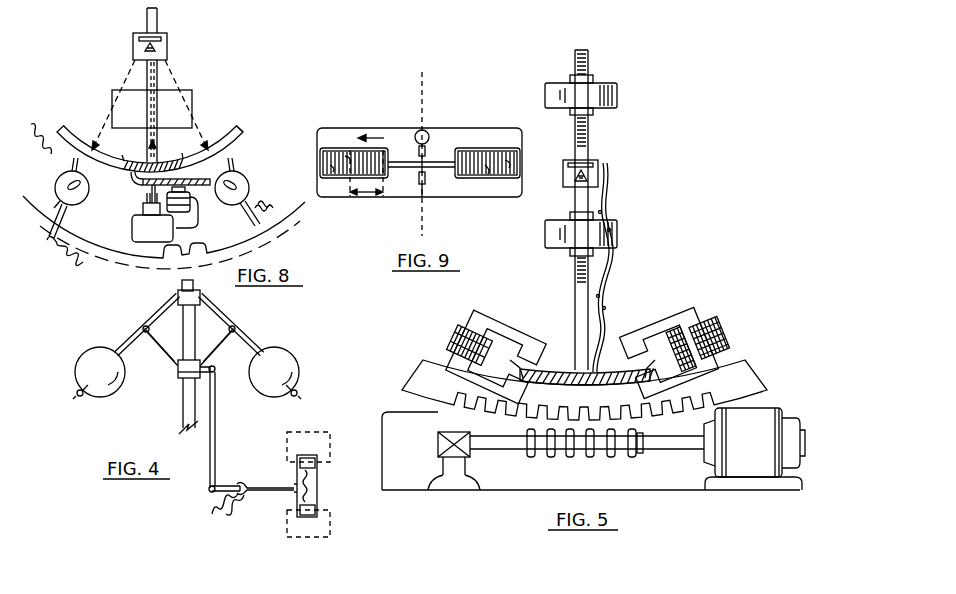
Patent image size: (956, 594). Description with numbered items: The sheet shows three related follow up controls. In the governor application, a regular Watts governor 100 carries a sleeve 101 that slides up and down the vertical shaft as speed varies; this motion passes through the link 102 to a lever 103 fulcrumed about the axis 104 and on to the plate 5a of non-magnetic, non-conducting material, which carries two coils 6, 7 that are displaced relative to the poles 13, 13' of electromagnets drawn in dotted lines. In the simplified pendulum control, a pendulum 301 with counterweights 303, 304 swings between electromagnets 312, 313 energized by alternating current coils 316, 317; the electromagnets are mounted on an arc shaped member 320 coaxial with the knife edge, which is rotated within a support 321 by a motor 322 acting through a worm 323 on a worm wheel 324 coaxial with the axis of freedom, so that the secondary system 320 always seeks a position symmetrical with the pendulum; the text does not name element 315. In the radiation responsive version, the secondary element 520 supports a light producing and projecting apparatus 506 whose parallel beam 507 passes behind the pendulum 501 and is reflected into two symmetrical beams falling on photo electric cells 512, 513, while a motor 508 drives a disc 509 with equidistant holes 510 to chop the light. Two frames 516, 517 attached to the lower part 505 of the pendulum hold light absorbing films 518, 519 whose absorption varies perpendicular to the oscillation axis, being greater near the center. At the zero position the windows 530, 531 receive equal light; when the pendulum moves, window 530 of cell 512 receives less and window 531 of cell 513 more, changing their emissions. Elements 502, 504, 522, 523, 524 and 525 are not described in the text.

In FIG. 8, the pendulum 501 is at (160, 78).
In FIG. 8, the lamp housing 502 is at (160, 39).
In FIG. 9, the lamp housing 502 is at (428, 131).
In FIG. 8, the lens 504 is at (192, 95).
In FIG. 8, the lower part of the pendulum 505 is at (154, 157).
In FIG. 9, the lower part of the pendulum 505 is at (403, 170).
In FIG. 8, the light producing and projecting apparatus 506 is at (152, 228).
In FIG. 8, the parallel beam of light 507 is at (147, 201).
In FIG. 9, the parallel beam of light 507 is at (416, 132).
In FIG. 8, the motor 508 is at (186, 218).
In FIG. 8, the disc 509 is at (165, 164).
In FIG. 8, the holes 510 is at (147, 163).
In FIG. 8, the photo electric cell 512 is at (83, 203).
In FIG. 8, the photo electric cell 513 is at (288, 172).
In FIG. 8, the frame 516 is at (92, 102).
In FIG. 9, the frame 516 is at (333, 130).
In FIG. 8, the frame 517 is at (205, 127).
In FIG. 9, the frame 517 is at (472, 148).
In FIG. 9, the light absorbing film 518 is at (333, 173).
In FIG. 9, the light absorbing film 519 is at (488, 172).
In FIG. 8, the secondary element 520 is at (262, 245).
In FIG. 8, the lead wire 522 is at (35, 116).
In FIG. 8, the lead wire 523 is at (80, 272).
In FIG. 8, the supporting rod 524 is at (53, 212).
In FIG. 8, the cross bar 525 is at (143, 182).
In FIG. 8, the window 530 is at (78, 170).
In FIG. 9, the window 530 is at (348, 158).
In FIG. 8, the window 531 is at (246, 134).
In FIG. 9, the window 531 is at (513, 158).
In FIG. 4, the Watts governor 100 is at (193, 330).
In FIG. 4, the sleeve 101 is at (176, 378).
In FIG. 4, the link 102 is at (215, 421).
In FIG. 4, the lever 103 is at (255, 495).
In FIG. 4, the axis 104 is at (238, 483).
In FIG. 4, the plate 5a is at (318, 488).
In FIG. 4, the coil 6 is at (305, 458).
In FIG. 4, the coil 7 is at (317, 505).
In FIG. 4, the pole 13 is at (309, 436).
In FIG. 4, the pole 13' is at (321, 536).
In FIG. 5, the pendulum 301 is at (589, 140).
In FIG. 5, the counterweight 303 is at (618, 96).
In FIG. 5, the counterweight 304 is at (618, 230).
In FIG. 5, the electromagnet 312 is at (486, 310).
In FIG. 5, the electromagnet 313 is at (655, 318).
In FIG. 5, the armature 315 is at (584, 386).
In FIG. 5, the coil 316 is at (460, 333).
In FIG. 5, the coil 317 is at (708, 322).
In FIG. 5, the arc shaped member 320 is at (748, 362).
In FIG. 5, the support 321 is at (383, 398).
In FIG. 5, the motor 322 is at (772, 440).
In FIG. 5, the worm 323 is at (606, 457).
In FIG. 5, the worm wheel 324 is at (438, 440).